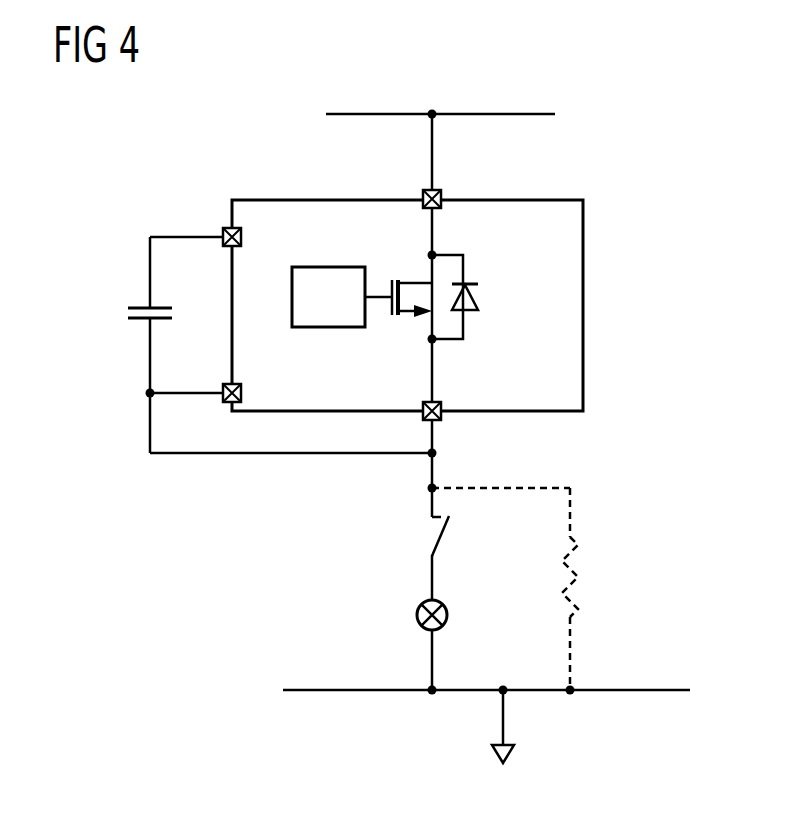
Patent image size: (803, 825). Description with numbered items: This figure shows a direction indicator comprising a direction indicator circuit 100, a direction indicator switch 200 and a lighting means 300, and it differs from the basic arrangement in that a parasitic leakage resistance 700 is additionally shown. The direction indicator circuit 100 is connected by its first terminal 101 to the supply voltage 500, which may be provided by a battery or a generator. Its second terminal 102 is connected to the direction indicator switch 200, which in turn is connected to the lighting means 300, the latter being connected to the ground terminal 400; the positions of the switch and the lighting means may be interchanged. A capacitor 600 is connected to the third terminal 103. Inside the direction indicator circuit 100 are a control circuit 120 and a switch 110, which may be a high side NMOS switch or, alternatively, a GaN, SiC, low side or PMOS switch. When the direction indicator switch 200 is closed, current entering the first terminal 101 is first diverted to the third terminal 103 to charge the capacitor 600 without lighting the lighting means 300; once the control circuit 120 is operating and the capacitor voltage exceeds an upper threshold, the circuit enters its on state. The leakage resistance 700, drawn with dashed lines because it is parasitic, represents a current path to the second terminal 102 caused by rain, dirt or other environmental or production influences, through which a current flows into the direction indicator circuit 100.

The supply voltage 500 is at (358, 114).
The direction indicator circuit 100 is at (583, 300).
The first terminal 101 is at (426, 188).
The second terminal 102 is at (441, 416).
The third terminal 103 is at (224, 248).
The capacitor 600 is at (128, 315).
The control circuit 120 is at (328, 328).
The switch 110 is at (489, 328).
The direction indicator switch 200 is at (445, 538).
The lighting means 300 is at (448, 615).
The leakage resistance 700 is at (578, 570).
The ground terminal 400 is at (620, 690).